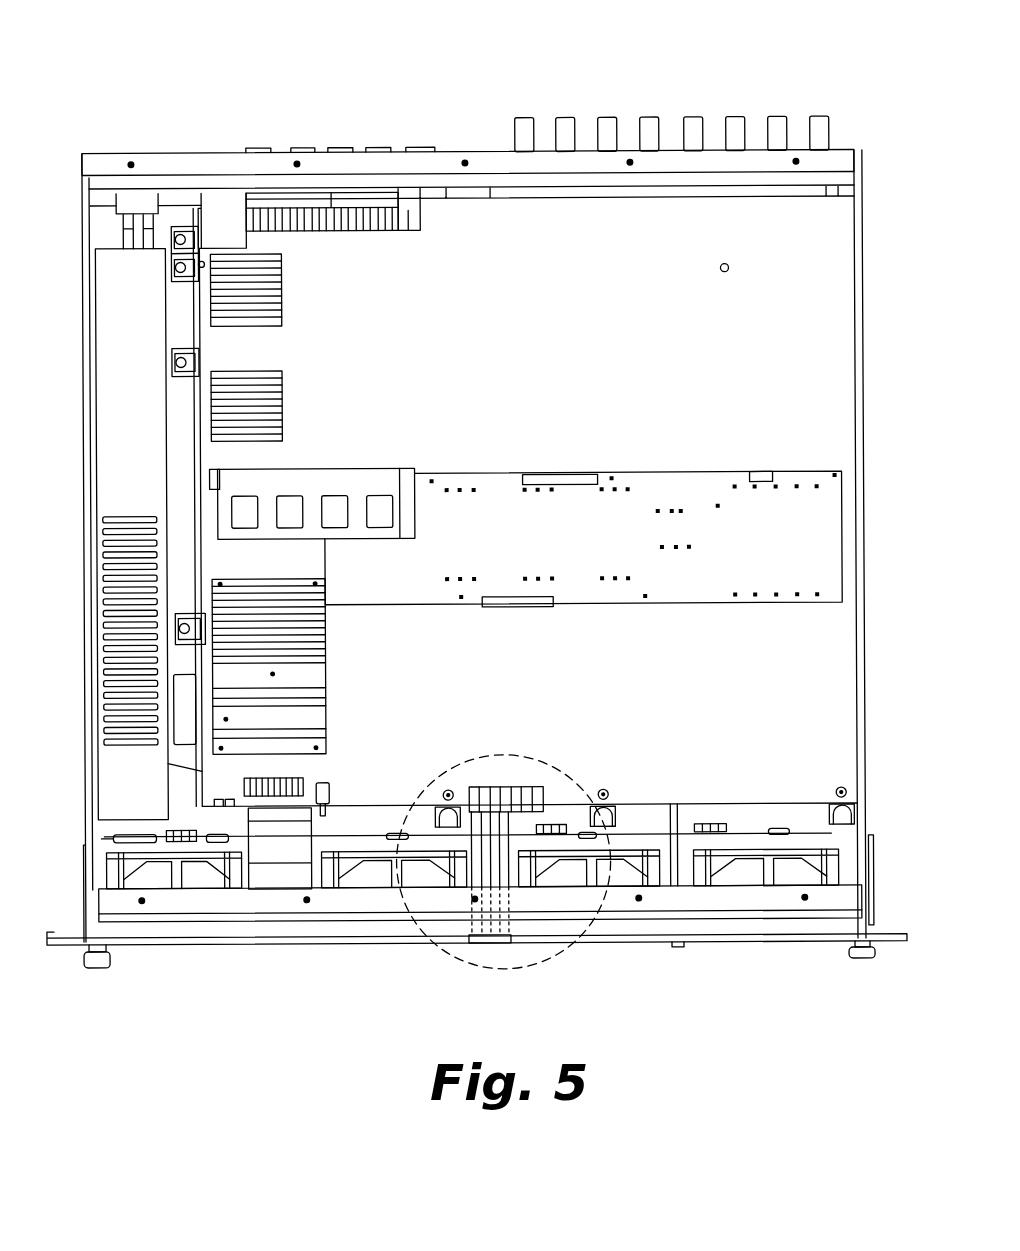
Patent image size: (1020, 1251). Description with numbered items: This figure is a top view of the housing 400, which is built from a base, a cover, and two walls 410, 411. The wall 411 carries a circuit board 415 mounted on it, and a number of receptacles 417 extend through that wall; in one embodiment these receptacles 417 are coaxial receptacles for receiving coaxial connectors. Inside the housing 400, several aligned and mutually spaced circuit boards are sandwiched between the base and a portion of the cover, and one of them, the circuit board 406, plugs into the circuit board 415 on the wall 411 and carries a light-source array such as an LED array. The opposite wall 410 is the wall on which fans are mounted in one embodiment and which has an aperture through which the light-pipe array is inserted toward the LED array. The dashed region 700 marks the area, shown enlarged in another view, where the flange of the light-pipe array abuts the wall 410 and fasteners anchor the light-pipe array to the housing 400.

The housing 400 is at (403, 81).
The circuit board 406 is at (750, 678).
The wall 410 is at (768, 900).
The wall 411 is at (840, 157).
The circuit board 415 is at (272, 203).
The receptacles 417 is at (826, 117).
The region 700 is at (553, 956).